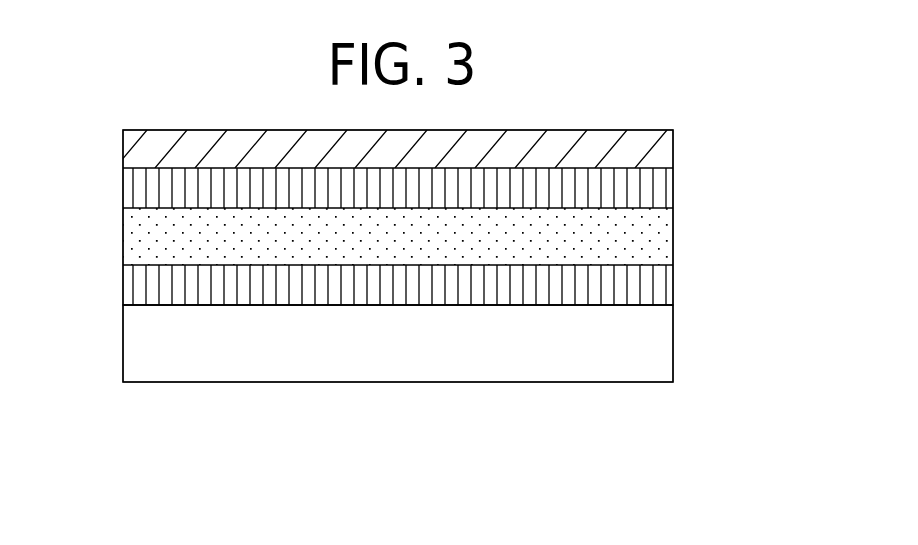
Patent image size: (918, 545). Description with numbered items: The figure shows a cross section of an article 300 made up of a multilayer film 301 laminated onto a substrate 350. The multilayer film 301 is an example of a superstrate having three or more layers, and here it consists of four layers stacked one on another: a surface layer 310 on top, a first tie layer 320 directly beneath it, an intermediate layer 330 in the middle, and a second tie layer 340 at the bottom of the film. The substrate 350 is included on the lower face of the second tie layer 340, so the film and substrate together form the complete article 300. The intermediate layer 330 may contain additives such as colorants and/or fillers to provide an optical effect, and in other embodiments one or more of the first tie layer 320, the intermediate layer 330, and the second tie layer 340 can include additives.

The article 300 is at (682, 130).
The multilayer film 301 is at (112, 130).
The surface layer 310 is at (651, 141).
The first tie layer 320 is at (178, 168).
The intermediate layer 330 is at (572, 245).
The second tie layer 340 is at (158, 270).
The substrate 350 is at (443, 357).